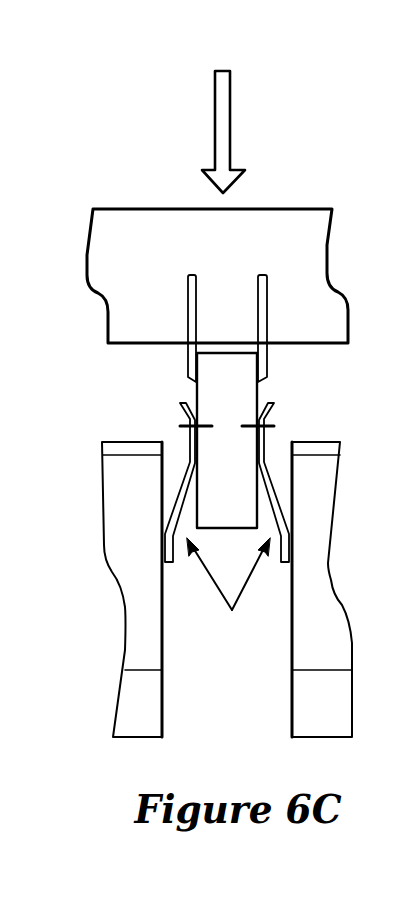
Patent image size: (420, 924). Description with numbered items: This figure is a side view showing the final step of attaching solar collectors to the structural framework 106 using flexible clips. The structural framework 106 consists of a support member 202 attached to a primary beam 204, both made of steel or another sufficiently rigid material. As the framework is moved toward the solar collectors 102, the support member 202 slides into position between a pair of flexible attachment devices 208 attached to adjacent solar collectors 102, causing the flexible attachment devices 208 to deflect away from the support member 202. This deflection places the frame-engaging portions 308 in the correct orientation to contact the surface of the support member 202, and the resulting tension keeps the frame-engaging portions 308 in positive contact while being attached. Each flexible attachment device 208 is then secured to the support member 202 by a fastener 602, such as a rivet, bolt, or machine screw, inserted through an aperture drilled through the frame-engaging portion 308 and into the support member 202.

The structural framework 106 is at (174, 290).
The primary beam 204 is at (205, 264).
The support member 202 is at (207, 467).
The fastener 602 is at (186, 417).
The frame-engaging portion 308 is at (193, 448).
The solar collector 102 is at (147, 620).
The flexible attachment device 208 is at (228, 587).